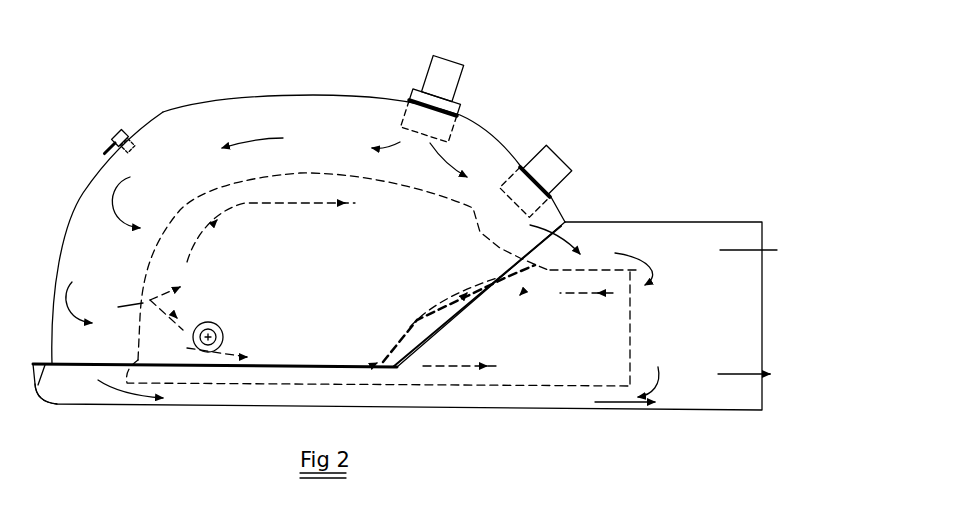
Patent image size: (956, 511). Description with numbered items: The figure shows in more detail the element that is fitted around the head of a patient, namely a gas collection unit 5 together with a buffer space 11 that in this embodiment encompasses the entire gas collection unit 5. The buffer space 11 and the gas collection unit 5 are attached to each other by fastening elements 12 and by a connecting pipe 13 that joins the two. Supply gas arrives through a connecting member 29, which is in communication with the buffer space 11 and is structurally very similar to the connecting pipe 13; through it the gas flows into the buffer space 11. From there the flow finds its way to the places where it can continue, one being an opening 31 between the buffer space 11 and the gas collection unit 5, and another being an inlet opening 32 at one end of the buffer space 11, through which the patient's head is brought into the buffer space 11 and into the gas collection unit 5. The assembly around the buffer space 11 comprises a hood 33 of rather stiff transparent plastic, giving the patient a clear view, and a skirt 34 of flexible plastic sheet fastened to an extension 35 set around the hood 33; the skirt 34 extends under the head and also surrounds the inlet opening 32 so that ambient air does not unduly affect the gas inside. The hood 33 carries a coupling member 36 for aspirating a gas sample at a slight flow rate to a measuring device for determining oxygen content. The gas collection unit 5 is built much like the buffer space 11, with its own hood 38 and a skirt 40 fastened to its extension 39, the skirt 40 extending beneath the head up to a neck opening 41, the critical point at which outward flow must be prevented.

The gas collection unit 5 is at (306, 168).
The buffer space 11 is at (232, 90).
The fastening elements 12 is at (230, 323).
The connecting pipe 13 is at (540, 146).
The connecting member 29 is at (420, 68).
The opening 31 is at (143, 290).
The inlet opening 32 is at (740, 312).
The hood 33 is at (92, 182).
The skirt 34 is at (637, 222).
The extension 35 is at (40, 374).
The coupling member 36 is at (123, 133).
The hood 38 is at (238, 183).
The extension 39 is at (528, 276).
The skirt 40 is at (527, 388).
The neck opening 41 is at (618, 337).